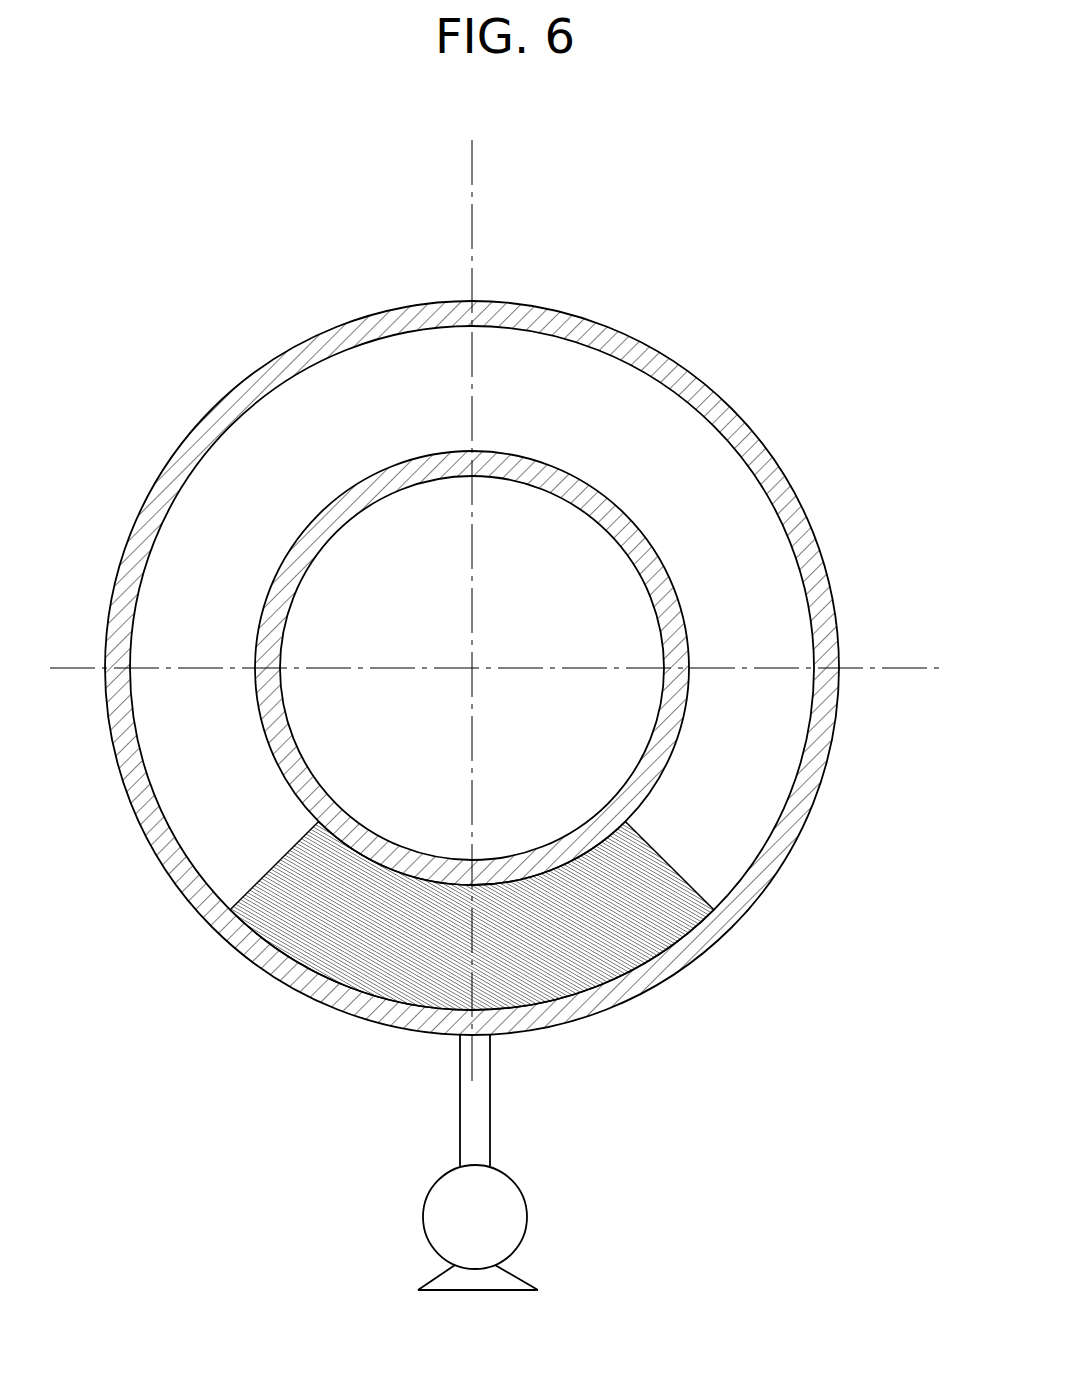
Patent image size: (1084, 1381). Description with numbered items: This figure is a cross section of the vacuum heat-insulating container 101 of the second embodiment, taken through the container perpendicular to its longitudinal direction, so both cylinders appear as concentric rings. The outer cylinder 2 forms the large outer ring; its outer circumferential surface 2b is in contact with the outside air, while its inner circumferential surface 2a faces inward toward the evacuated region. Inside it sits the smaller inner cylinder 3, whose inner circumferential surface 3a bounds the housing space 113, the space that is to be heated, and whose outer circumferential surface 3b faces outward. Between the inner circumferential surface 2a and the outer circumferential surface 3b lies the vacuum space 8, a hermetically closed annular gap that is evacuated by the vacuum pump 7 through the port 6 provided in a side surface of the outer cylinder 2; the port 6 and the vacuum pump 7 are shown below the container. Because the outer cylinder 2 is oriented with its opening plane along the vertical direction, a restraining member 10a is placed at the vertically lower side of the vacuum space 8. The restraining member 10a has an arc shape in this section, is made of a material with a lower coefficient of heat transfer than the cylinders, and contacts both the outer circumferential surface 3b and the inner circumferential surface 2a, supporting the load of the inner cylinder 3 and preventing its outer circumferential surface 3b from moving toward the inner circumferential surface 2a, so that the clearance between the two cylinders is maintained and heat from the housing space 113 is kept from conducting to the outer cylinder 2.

The vacuum heat-insulating container 101 is at (362, 158).
The outer cylinder 2 is at (815, 790).
The inner circumferential surface of the outer cylinder 2a is at (775, 828).
The outer circumferential surface of the outer cylinder 2b is at (797, 840).
The inner cylinder 3 is at (660, 597).
The inner circumferential surface of the inner cylinder 3a is at (663, 642).
The outer circumferential surface of the inner cylinder 3b is at (688, 640).
The vacuum space 8 is at (283, 467).
The housing space 113 is at (447, 550).
The restraining member 10a is at (675, 973).
The port 6 is at (482, 1118).
The vacuum pump 7 is at (517, 1252).